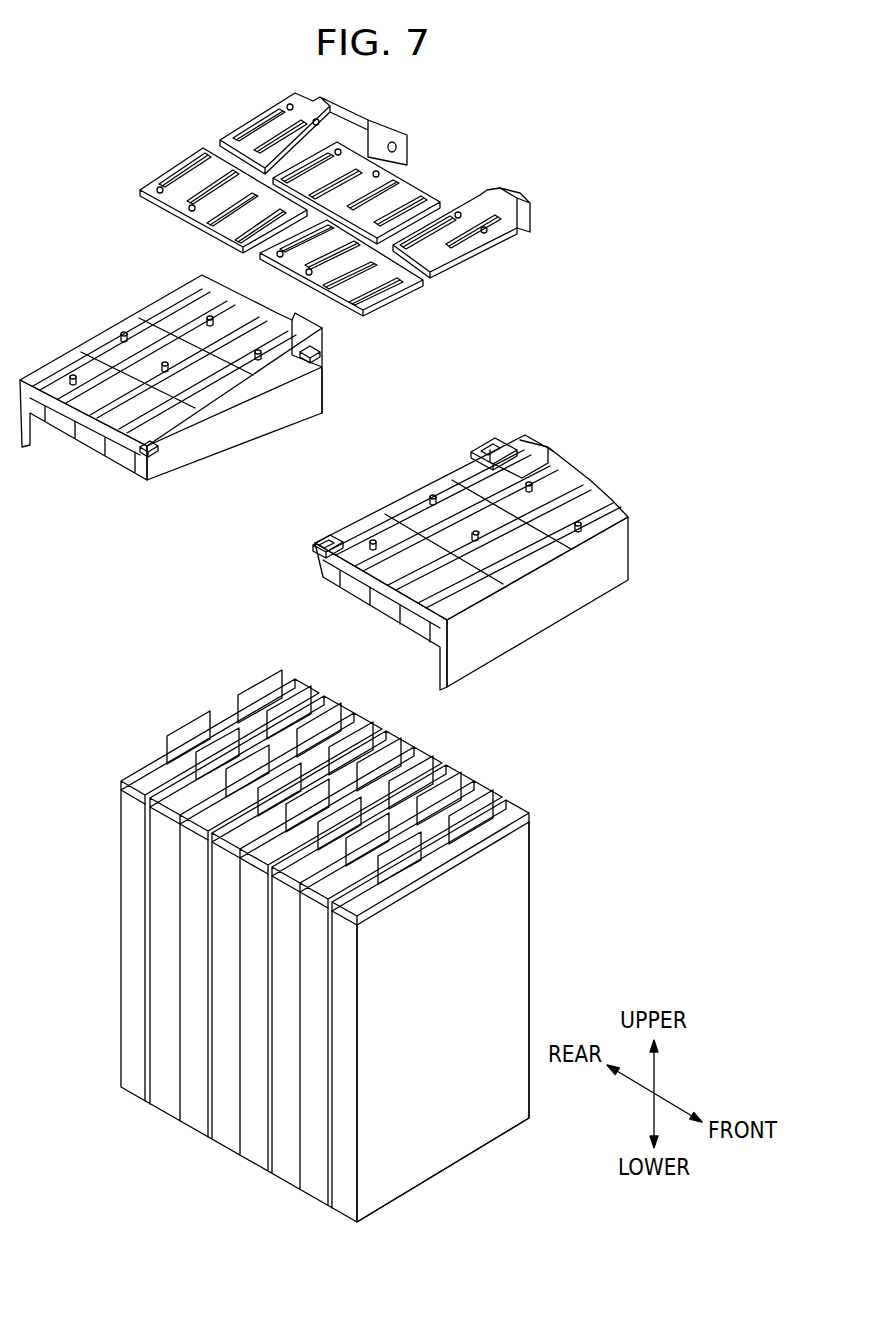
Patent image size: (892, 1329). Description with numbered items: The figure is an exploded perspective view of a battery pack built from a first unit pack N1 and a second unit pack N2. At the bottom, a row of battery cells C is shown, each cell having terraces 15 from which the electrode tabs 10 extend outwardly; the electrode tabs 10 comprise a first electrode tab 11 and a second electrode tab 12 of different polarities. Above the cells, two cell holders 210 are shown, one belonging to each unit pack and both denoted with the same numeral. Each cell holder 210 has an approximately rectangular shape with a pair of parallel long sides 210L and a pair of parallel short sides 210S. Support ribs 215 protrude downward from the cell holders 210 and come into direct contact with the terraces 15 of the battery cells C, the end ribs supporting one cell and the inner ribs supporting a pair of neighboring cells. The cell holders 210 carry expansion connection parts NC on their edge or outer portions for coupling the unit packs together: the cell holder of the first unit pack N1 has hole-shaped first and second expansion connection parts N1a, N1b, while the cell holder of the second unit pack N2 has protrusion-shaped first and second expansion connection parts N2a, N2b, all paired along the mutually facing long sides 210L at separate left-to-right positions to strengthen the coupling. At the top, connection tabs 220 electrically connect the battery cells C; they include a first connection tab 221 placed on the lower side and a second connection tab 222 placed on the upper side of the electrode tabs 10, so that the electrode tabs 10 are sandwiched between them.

The electrode tab 10 is at (367, 909).
The first electrode tab 11 is at (185, 735).
The second electrode tab 12 is at (267, 685).
The terrace 15 is at (512, 825).
The battery cell C is at (513, 938).
The cell holder 210 is at (367, 482).
The short side 210S is at (342, 563).
The long side 210L is at (567, 553).
The support rib 215 is at (240, 417).
The connection tab 220 is at (400, 204).
The first connection tab 221 is at (495, 238).
The second connection tab 222 is at (511, 220).
The first unit pack N1 is at (492, 538).
The second unit pack N2 is at (210, 403).
The first expansion connection part N1a is at (488, 440).
The second expansion connection part N1b is at (318, 540).
The first expansion connection part N2a is at (318, 352).
The second expansion connection part N2b is at (152, 450).
The expansion connection part NC is at (408, 394).